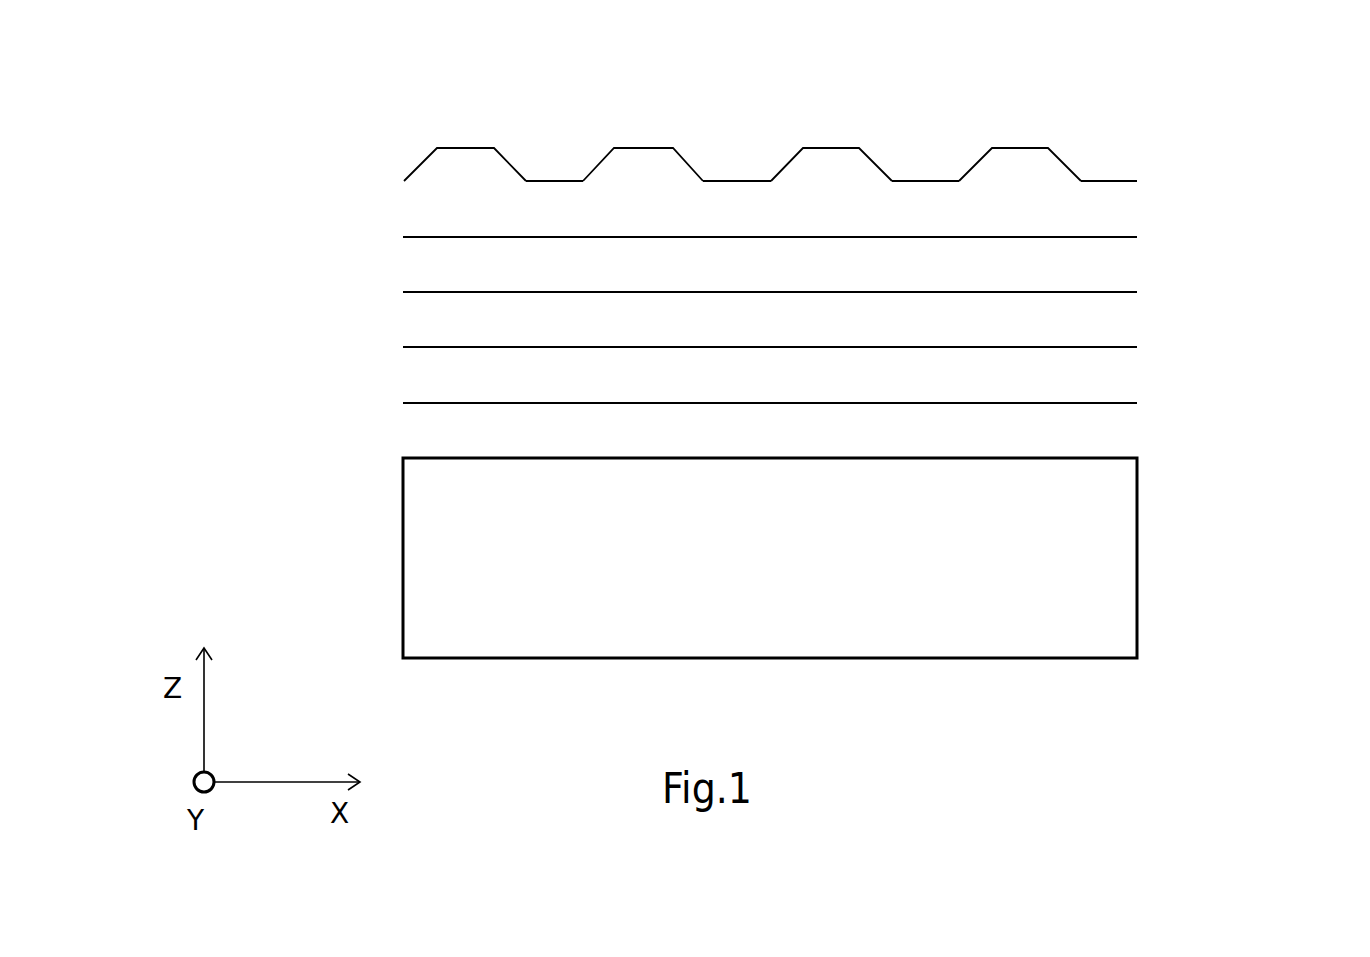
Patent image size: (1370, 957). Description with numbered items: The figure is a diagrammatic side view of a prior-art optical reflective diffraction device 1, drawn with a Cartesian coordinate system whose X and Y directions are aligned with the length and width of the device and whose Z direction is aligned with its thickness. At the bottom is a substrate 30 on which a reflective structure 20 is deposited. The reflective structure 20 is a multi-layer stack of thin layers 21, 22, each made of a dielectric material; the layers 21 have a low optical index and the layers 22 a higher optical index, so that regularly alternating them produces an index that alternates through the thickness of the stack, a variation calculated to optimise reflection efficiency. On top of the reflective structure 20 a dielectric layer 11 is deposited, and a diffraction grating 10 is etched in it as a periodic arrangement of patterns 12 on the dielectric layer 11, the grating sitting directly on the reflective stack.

The optical reflective diffraction device 1 is at (1138, 735).
The diffraction grating 10 is at (735, 127).
The dielectric layer 11 is at (438, 200).
The patterns 12 is at (1029, 157).
The reflective structure 20 is at (713, 355).
The thin layer 21 is at (417, 303).
The thin layer 22 is at (412, 245).
The substrate 30 is at (1122, 561).